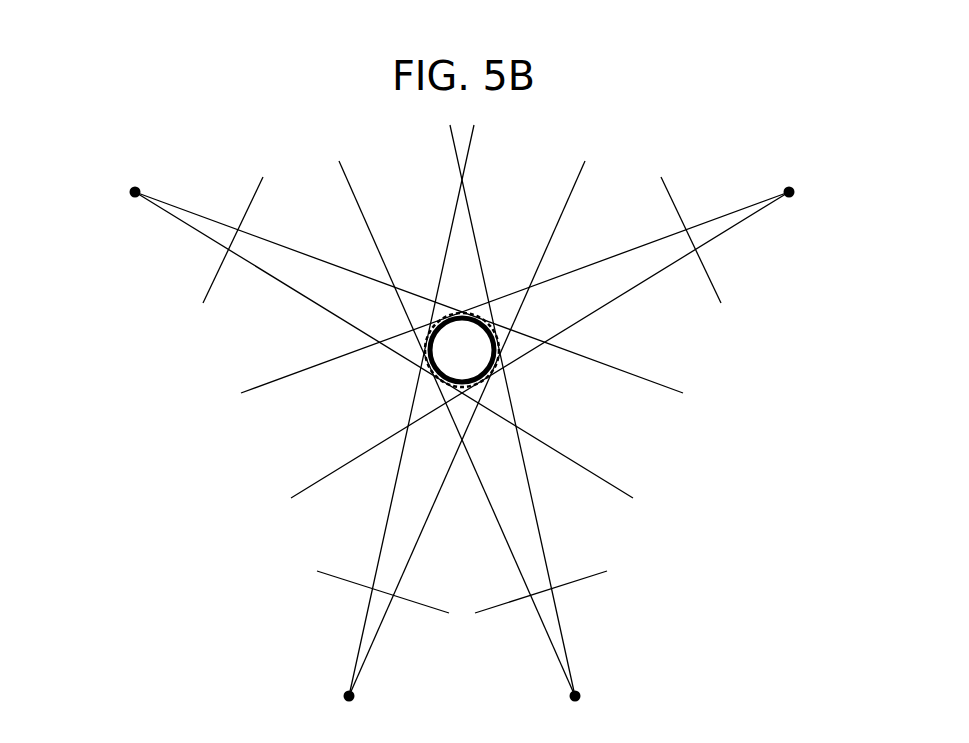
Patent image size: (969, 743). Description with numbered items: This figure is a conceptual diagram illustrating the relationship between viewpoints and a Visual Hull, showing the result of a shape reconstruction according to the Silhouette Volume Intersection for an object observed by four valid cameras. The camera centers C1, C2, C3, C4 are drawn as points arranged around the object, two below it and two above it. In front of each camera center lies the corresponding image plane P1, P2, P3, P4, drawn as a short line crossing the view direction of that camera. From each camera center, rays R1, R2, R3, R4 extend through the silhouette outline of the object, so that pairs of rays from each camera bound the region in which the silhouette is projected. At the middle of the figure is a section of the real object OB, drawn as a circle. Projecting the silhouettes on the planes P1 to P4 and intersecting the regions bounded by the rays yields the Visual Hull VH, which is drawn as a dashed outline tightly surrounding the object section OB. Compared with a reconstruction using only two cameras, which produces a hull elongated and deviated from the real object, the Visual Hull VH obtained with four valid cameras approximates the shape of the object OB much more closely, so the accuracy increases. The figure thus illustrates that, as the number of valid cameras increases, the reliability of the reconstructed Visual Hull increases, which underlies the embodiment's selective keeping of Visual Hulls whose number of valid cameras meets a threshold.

The camera center C1 is at (580, 696).
The camera center C2 is at (344, 696).
The camera center C3 is at (794, 192).
The camera center C4 is at (130, 192).
The ray R1 is at (542, 542).
The ray R2 is at (382, 542).
The ray R3 is at (597, 310).
The ray R4 is at (327, 310).
The image plane P1 is at (582, 578).
The image plane P2 is at (342, 578).
The image plane P3 is at (707, 273).
The image plane P4 is at (217, 273).
The section of a real object OB is at (503, 367).
The Visual Hull VH is at (435, 315).